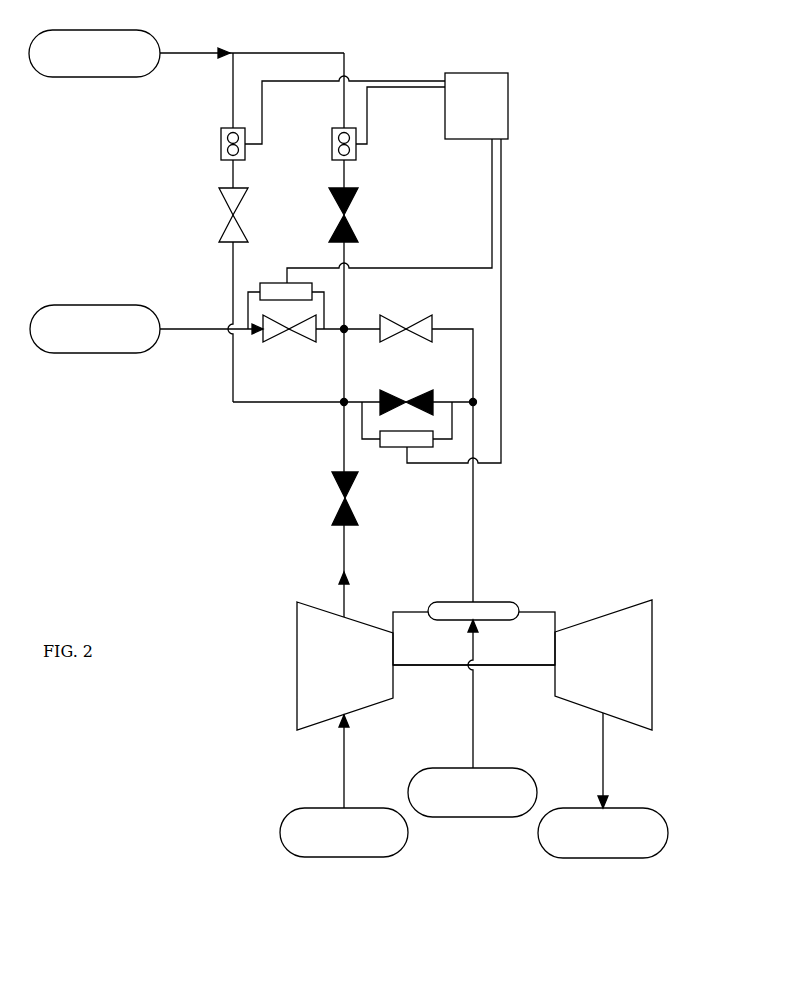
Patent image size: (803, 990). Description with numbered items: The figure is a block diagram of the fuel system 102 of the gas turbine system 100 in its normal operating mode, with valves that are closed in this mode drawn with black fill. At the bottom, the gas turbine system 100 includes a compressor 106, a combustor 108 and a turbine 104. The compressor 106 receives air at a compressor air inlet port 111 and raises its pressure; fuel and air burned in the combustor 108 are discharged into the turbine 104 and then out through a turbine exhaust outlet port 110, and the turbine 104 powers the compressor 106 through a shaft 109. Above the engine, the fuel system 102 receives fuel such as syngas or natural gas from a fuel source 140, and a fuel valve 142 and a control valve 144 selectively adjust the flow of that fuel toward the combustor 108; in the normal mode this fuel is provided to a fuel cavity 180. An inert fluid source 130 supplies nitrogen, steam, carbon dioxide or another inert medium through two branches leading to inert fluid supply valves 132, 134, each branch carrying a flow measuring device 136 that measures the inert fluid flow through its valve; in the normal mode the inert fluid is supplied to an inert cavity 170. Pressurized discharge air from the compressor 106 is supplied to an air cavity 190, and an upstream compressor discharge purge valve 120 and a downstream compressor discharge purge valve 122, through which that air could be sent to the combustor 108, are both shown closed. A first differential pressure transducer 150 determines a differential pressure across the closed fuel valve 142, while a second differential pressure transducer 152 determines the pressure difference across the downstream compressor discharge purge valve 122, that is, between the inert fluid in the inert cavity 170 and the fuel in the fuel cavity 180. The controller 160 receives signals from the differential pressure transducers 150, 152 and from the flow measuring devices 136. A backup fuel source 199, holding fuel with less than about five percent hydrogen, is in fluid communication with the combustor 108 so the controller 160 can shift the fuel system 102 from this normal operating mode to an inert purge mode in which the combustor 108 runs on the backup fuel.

The gas turbine system 100 is at (232, 744).
The fuel system 102 is at (168, 405).
The turbine 104 is at (652, 600).
The compressor 106 is at (297, 602).
The combustor 108 is at (493, 602).
The shaft 109 is at (493, 665).
The turbine exhaust outlet port 110 is at (603, 785).
The compressor air inlet port 111 is at (344, 786).
The upstream compressor discharge purge valve 120 is at (333, 473).
The downstream compressor discharge purge valve 122 is at (380, 390).
The inert fluid source 130 is at (186, 53).
The inert fluid supply valve 132 is at (330, 188).
The inert fluid supply valve 134 is at (221, 188).
The flow measuring device 136 is at (221, 143).
The fuel source 140 is at (146, 329).
The fuel valve 142 is at (311, 342).
The control valve 144 is at (382, 315).
The first differential pressure transducer 150 is at (262, 283).
The second differential pressure transducer 152 is at (381, 447).
The controller 160 is at (508, 73).
The inert cavity 170 is at (298, 402).
The fuel cavity 180 is at (473, 380).
The air cavity 190 is at (343, 552).
The backup fuel source 199 is at (472, 718).